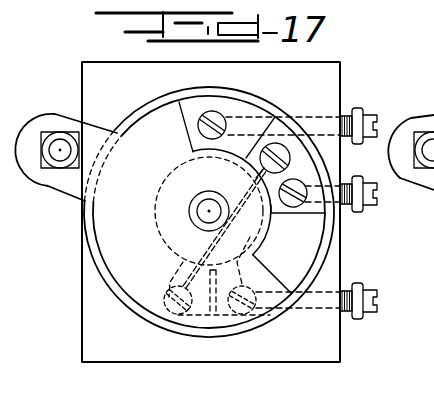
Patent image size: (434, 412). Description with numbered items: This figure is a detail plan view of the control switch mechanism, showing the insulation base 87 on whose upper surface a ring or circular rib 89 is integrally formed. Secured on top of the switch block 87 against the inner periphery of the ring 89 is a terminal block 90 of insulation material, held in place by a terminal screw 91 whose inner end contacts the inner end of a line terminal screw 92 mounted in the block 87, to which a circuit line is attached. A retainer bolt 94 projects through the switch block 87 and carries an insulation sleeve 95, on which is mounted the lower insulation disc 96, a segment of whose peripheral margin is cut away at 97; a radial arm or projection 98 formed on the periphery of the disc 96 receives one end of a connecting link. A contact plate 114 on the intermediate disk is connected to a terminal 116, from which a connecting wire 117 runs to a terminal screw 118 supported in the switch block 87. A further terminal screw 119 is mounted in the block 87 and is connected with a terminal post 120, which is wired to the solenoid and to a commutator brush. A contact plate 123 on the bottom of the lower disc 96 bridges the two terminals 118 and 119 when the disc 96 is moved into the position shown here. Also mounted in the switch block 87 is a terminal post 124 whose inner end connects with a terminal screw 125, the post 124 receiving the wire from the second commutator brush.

The insulation base 87 is at (138, 343).
The ring or circular rib 89 is at (143, 305).
The terminal block 90 is at (192, 112).
The terminal screw 91 is at (214, 112).
The line terminal screw 92 is at (366, 117).
The retainer bolt 94 is at (211, 207).
The insulation sleeve 95 is at (191, 216).
The insulation disc 96 is at (132, 257).
The cut-away segment 97 is at (268, 264).
The radial arm or projection 98 is at (58, 115).
The contact plate 114 is at (426, 282).
The terminal 116 is at (292, 160).
The connecting wire 117 is at (238, 240).
The terminal screw 118 is at (183, 334).
The terminal screw 119 is at (253, 320).
The terminal post 120 is at (376, 294).
The contact plate 123 is at (160, 238).
The terminal post 124 is at (377, 188).
The terminal screw 125 is at (307, 201).